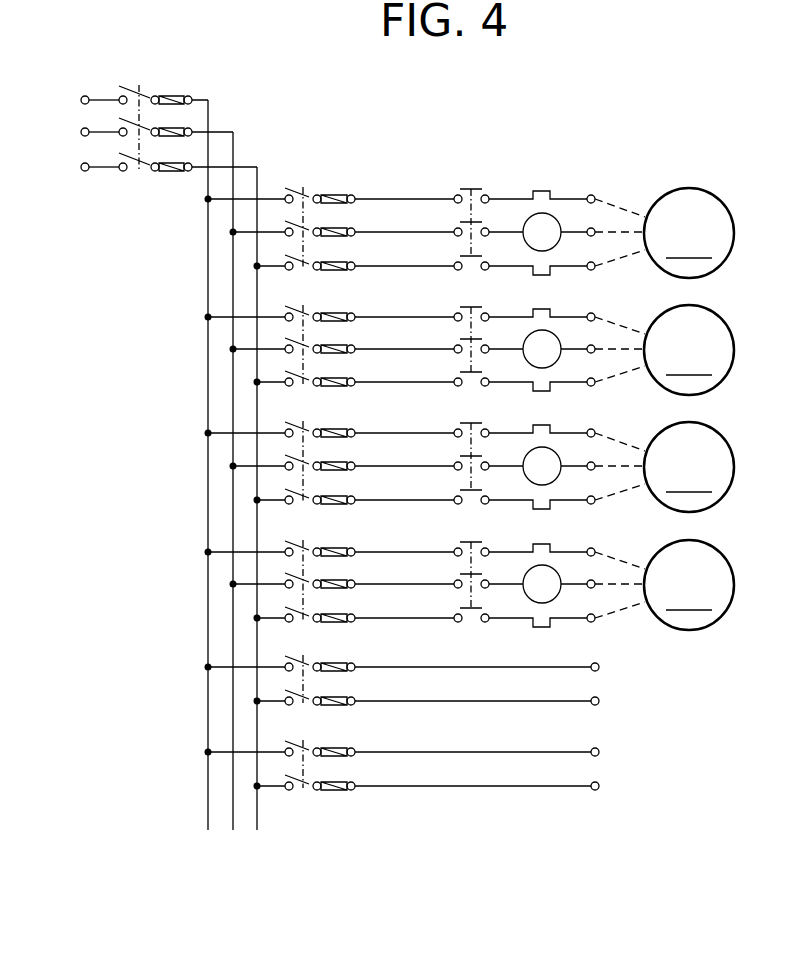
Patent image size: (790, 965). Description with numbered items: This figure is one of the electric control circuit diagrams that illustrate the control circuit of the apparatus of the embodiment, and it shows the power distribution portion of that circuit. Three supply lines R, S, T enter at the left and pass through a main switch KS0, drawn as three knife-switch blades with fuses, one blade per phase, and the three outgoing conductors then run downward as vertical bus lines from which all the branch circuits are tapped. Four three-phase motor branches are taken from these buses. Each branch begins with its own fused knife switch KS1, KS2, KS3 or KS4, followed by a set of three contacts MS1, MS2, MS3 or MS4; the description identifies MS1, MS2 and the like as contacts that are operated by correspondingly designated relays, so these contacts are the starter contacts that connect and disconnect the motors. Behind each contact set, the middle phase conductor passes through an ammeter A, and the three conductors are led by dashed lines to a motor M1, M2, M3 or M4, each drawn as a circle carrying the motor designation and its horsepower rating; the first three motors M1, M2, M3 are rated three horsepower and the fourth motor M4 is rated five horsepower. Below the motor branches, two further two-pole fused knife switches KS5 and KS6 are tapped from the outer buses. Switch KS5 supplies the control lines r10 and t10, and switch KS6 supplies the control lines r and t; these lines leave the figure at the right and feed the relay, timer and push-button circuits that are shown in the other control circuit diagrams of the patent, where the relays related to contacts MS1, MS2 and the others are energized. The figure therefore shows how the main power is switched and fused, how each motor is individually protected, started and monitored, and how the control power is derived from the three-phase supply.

The supply line R is at (89, 100).
The supply line S is at (89, 132).
The supply line T is at (89, 167).
The main fused knife switch KS0 is at (155, 117).
The fused knife switch for motor M1 KS1 is at (331, 218).
The fused knife switch for motor M2 KS2 is at (331, 335).
The fused knife switch for motor M3 KS3 is at (331, 452).
The fused knife switch for motor M4 KS4 is at (331, 570).
The fused knife switch for control lines r10, t10 KS5 is at (399, 669).
The fused knife switch for control lines r, t KS6 is at (399, 754).
The contact MS1 is at (467, 218).
The contact MS2 is at (467, 335).
The contact MS3 is at (467, 452).
The contact MS4 is at (467, 570).
The 3 HP motor M1 is at (689, 233).
The 3 HP motor M2 is at (689, 350).
The 3 HP motor M3 is at (689, 467).
The 5 HP motor M4 is at (689, 585).
The ammeter A is at (542, 408).
The control power line r10 is at (615, 666).
The control power line t10 is at (615, 700).
The control power line r is at (603, 751).
The control power line t is at (602, 785).